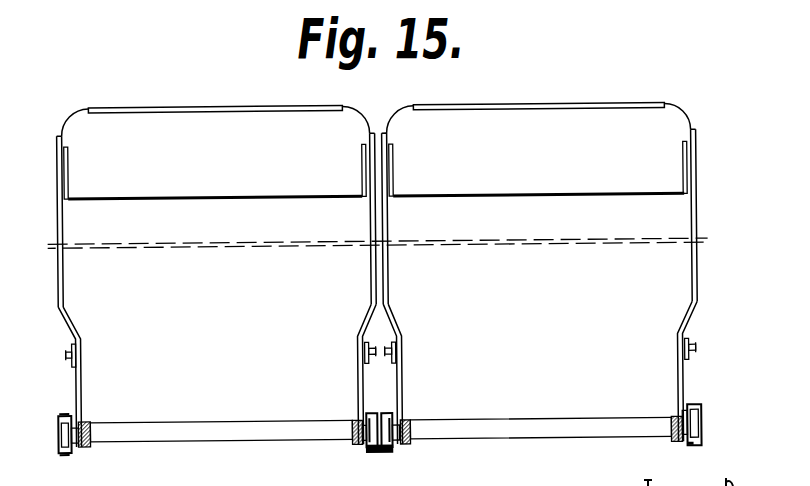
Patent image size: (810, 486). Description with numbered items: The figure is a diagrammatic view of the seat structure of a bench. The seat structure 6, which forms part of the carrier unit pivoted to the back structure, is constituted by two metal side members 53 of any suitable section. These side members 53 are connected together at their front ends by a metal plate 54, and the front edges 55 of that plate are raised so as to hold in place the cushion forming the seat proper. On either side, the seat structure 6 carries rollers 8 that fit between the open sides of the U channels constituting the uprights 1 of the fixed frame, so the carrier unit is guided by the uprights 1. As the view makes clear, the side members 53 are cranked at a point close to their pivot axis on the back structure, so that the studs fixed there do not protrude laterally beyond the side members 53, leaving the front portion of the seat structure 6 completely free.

The upright 1 is at (65, 450).
The seat structure 6 is at (93, 365).
The roller 8 is at (80, 425).
The side member 53 is at (59, 283).
The metal plate 54 is at (77, 127).
The front edge 55 is at (133, 108).